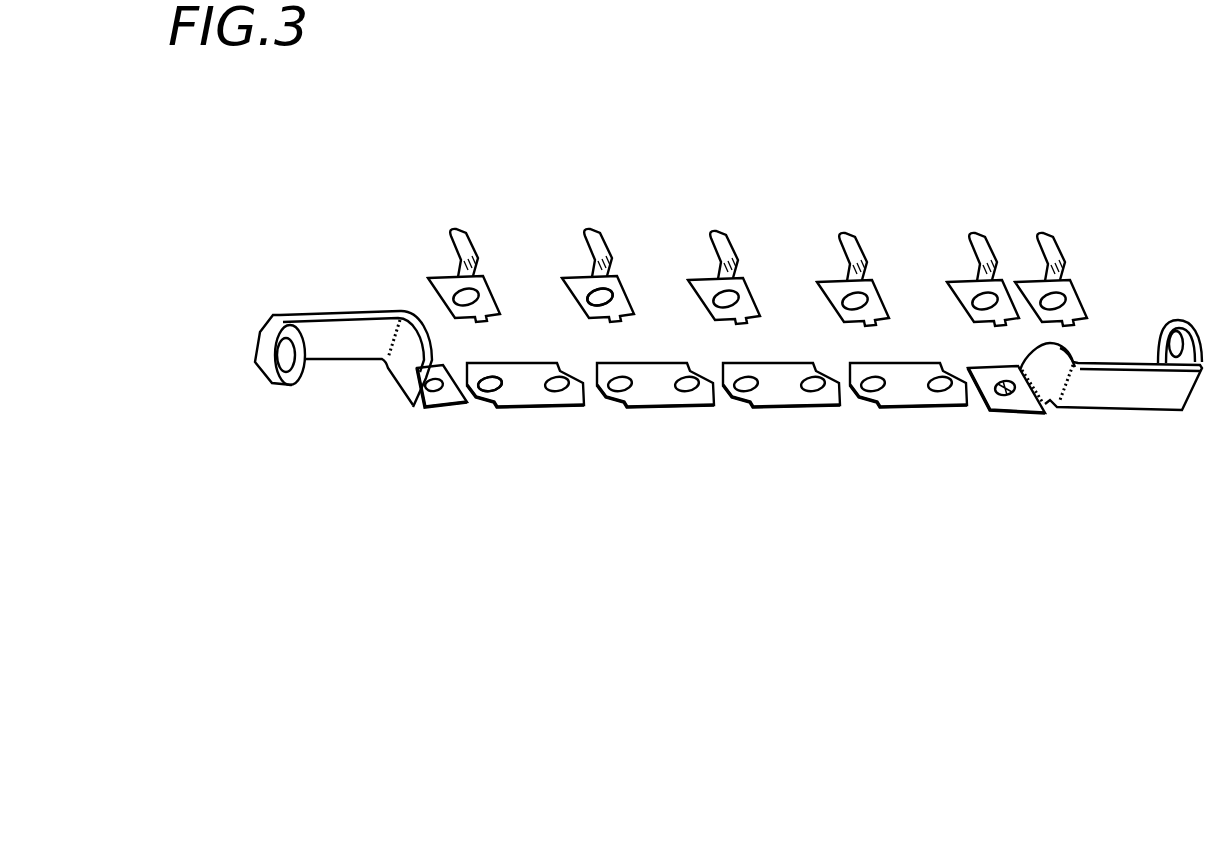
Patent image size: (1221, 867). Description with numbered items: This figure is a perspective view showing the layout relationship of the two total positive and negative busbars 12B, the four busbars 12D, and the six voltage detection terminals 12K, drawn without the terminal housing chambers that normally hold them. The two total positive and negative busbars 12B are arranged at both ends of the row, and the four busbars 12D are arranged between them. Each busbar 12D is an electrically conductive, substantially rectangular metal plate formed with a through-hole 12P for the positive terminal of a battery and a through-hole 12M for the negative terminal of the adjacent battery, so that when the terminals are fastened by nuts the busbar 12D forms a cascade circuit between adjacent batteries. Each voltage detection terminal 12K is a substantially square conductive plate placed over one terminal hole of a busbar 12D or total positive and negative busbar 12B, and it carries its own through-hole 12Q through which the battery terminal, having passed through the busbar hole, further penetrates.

The total positive and negative busbar 12B is at (368, 340).
The busbar 12D is at (547, 407).
The voltage detection terminal 12K is at (445, 277).
The through-hole 12M is at (422, 372).
The through-hole 12P is at (489, 382).
The through-hole 12Q is at (600, 292).